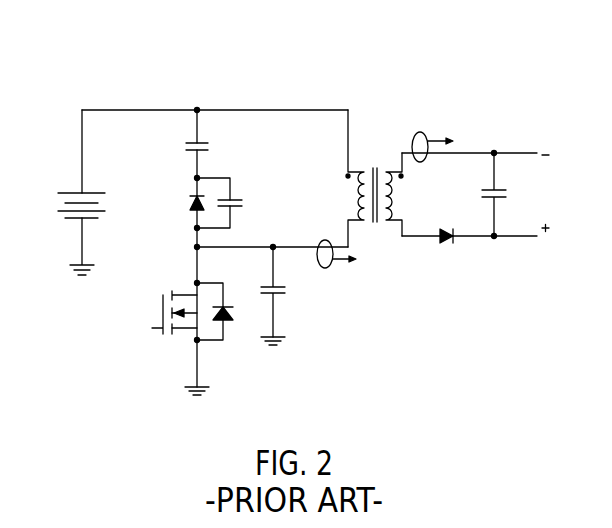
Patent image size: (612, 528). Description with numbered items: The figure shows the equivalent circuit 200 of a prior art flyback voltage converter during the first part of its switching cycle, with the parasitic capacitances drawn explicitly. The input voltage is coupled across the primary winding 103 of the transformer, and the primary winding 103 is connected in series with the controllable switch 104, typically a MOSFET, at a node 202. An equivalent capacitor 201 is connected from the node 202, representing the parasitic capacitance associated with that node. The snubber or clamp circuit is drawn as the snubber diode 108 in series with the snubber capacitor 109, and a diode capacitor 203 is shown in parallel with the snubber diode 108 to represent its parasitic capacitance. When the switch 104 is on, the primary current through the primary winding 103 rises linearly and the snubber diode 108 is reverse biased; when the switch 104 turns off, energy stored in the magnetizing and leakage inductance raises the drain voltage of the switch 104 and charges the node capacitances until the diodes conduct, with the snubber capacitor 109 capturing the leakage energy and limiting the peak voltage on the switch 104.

The equivalent circuit 200 is at (215, 60).
The primary winding 103 is at (353, 168).
The switch 104 is at (183, 293).
The snubber diode 108 is at (190, 208).
The snubber capacitor 109 is at (187, 151).
The equivalent capacitor 201 is at (277, 297).
The node 202 is at (310, 246).
The diode capacitor 203 is at (236, 200).